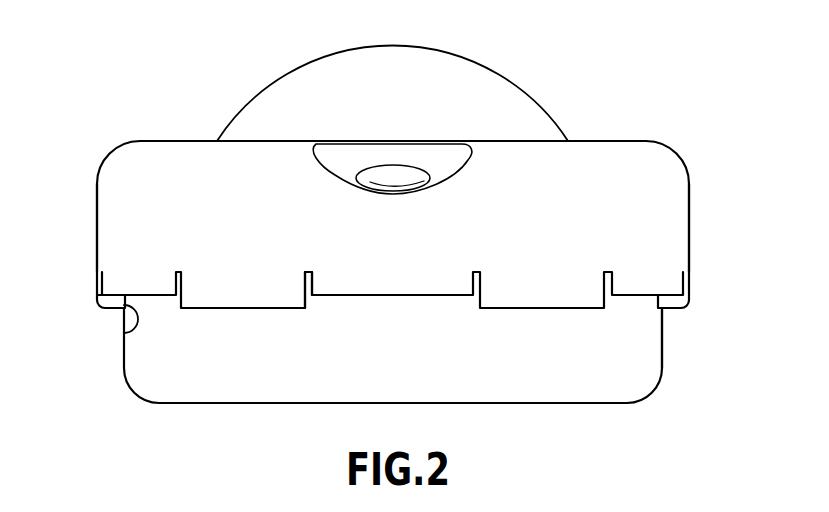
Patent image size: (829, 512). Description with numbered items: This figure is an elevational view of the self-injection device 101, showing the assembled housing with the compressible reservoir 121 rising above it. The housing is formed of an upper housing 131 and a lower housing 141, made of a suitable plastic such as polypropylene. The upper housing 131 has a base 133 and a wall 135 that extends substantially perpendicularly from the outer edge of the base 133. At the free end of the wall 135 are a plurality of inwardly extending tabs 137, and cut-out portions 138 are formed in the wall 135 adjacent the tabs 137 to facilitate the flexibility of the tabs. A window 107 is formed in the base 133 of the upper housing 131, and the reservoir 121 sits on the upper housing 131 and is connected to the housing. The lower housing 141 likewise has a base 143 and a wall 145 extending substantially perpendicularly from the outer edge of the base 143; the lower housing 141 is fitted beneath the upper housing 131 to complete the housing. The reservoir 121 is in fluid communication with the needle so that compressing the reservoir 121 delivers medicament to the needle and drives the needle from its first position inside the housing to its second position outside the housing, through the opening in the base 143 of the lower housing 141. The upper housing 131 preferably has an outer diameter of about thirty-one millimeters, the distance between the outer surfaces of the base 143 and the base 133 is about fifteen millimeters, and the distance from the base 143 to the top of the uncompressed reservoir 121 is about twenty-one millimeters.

The self-injection device 101 is at (665, 117).
The window 107 is at (373, 185).
The compressible reservoir 121 is at (493, 63).
The upper housing 131 is at (692, 228).
The base 133 is at (603, 140).
The wall 135 is at (97, 240).
The inwardly extending tabs 137 is at (122, 334).
The cut-out portions 138 is at (312, 282).
The lower housing 141 is at (120, 356).
The base 143 is at (575, 405).
The wall 145 is at (663, 333).